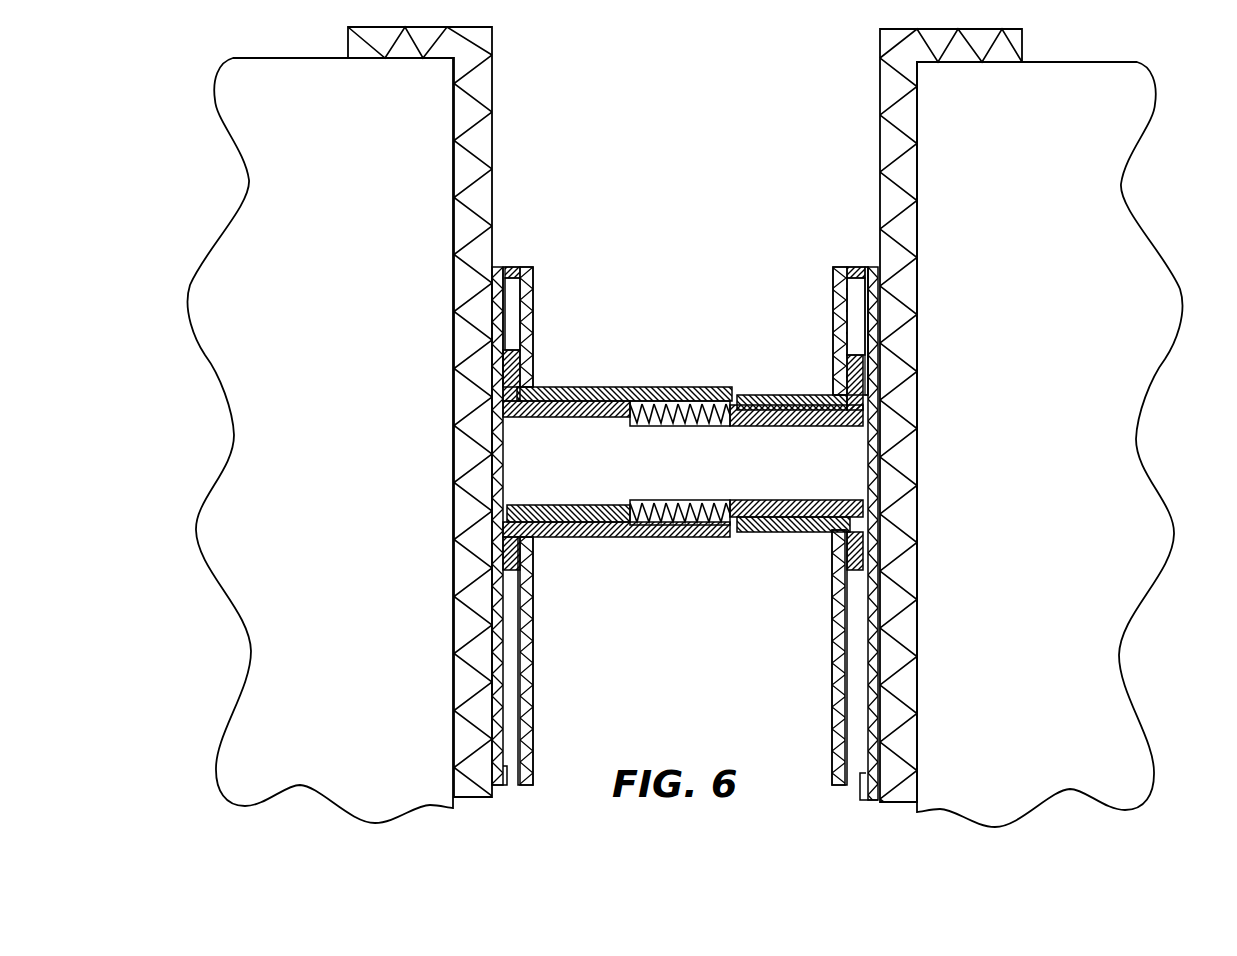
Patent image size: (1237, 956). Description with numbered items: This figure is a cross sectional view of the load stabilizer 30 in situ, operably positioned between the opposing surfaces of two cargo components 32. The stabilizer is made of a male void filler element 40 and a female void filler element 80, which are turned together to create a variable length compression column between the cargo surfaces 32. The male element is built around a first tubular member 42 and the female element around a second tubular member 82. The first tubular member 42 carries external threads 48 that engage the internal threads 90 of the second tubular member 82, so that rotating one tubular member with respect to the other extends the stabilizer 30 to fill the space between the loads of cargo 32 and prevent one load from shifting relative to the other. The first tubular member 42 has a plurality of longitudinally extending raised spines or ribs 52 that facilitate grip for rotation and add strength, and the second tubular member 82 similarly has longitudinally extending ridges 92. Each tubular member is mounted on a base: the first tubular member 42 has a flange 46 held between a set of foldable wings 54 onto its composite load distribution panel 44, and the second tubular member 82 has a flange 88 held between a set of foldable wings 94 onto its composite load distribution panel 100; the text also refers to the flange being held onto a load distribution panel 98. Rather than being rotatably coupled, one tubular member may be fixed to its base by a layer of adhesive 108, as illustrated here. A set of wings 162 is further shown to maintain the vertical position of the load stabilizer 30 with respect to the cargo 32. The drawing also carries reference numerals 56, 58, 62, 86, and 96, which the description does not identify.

The load stabilizer 30 is at (687, 202).
The cargo components 32 is at (349, 462).
The male void filler element 40 is at (746, 306).
The first tubular member 42 is at (743, 395).
The composite load distribution panel 44 is at (880, 170).
The flange 46 is at (845, 373).
The external threads 48 is at (727, 405).
The longitudinally extending raised spines or ribs 52 is at (765, 395).
The set of foldable wings 54 is at (853, 267).
The lower flange of second jamb 56 is at (832, 785).
The retaining hook 58 is at (861, 775).
The liner strip 62 is at (835, 267).
The female void filler element 80 is at (602, 337).
The second tubular member 82 is at (618, 426).
The rail portion 86 is at (587, 417).
The flange 88 is at (535, 372).
The internal threads 90 is at (663, 401).
The longitudinally extending ridges 92 is at (672, 387).
The set of foldable wings 94 is at (523, 267).
The lower flange of first jamb 96 is at (533, 785).
The load distribution panel 98 is at (506, 775).
The composite load distribution panel 100 is at (492, 183).
The layer of adhesive 108 is at (883, 530).
The set of wings 162 is at (480, 27).